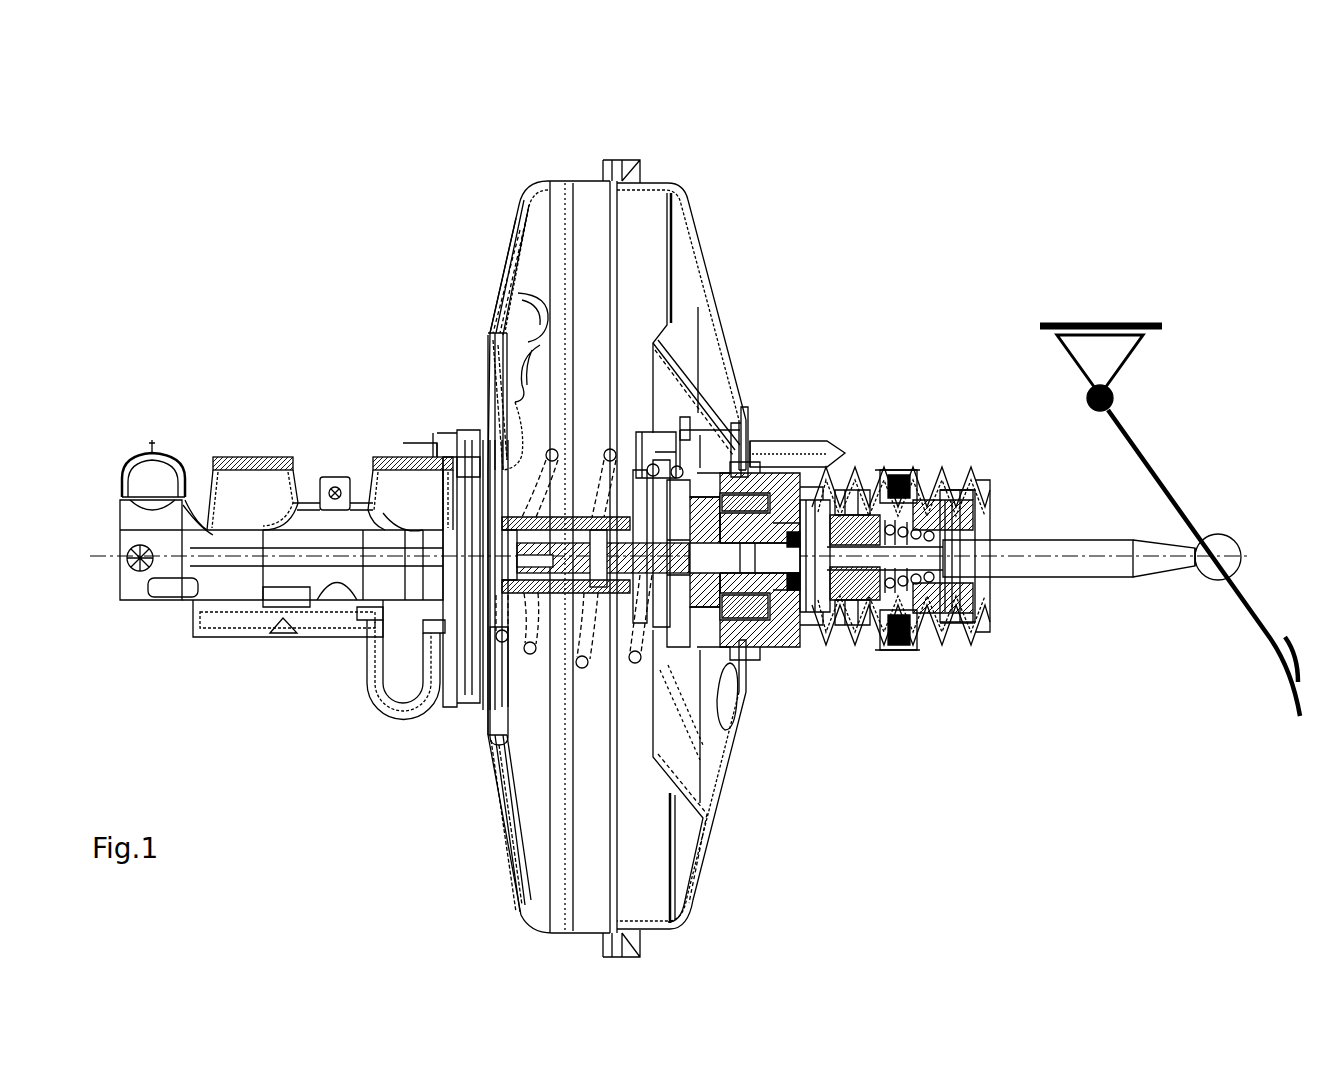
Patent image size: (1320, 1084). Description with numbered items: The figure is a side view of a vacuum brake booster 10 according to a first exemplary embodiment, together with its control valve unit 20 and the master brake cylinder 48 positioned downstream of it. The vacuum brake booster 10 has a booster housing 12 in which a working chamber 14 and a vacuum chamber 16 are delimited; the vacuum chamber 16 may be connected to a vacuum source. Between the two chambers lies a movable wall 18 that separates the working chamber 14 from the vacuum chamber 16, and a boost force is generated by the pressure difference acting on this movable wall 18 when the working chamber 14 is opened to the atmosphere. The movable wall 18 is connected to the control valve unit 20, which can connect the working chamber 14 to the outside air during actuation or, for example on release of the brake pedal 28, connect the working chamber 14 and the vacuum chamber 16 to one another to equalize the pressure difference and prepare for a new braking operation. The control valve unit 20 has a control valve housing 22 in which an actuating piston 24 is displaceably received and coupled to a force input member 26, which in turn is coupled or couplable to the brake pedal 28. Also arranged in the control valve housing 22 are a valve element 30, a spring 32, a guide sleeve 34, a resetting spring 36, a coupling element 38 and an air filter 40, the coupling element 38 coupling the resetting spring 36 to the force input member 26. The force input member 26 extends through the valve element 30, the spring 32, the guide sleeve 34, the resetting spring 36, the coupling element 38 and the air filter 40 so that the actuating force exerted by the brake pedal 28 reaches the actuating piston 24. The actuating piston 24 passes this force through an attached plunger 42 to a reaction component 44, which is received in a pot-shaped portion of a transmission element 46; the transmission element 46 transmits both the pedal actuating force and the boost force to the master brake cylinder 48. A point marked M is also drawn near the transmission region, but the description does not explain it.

The vacuum brake booster 10 is at (1180, 118).
The booster housing 12 is at (667, 184).
The working chamber 14 is at (700, 357).
The vacuum chamber 16 is at (538, 218).
The movable wall 18 is at (690, 218).
The control valve unit 20 is at (906, 362).
The control valve housing 22 is at (887, 593).
The actuating piston 24 is at (790, 520).
The force input member 26 is at (1120, 572).
The brake pedal 28 is at (1170, 497).
The valve element 30 is at (823, 593).
The spring 32 is at (856, 508).
The guide sleeve 34 is at (917, 520).
The resetting spring 36 is at (950, 512).
The coupling element 38 is at (930, 600).
The air filter 40 is at (963, 593).
The plunger 42 is at (725, 567).
The reaction component 44 is at (753, 462).
The transmission element 46 is at (602, 543).
The master brake cylinder 48 is at (243, 478).
The membrane / diaphragm springs M is at (555, 453).